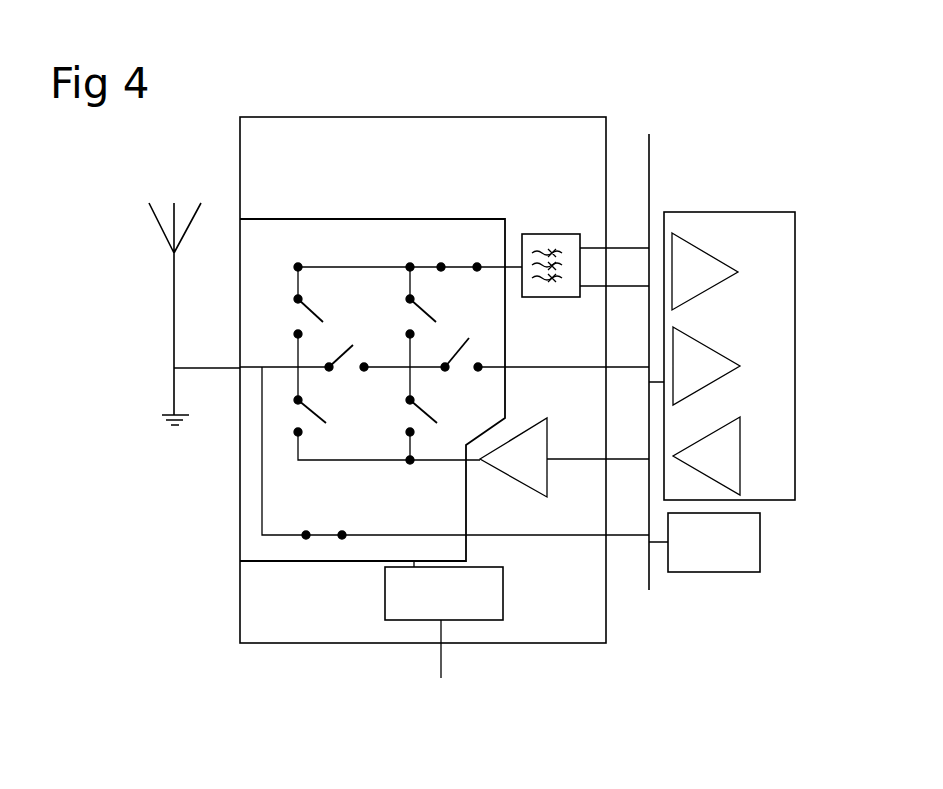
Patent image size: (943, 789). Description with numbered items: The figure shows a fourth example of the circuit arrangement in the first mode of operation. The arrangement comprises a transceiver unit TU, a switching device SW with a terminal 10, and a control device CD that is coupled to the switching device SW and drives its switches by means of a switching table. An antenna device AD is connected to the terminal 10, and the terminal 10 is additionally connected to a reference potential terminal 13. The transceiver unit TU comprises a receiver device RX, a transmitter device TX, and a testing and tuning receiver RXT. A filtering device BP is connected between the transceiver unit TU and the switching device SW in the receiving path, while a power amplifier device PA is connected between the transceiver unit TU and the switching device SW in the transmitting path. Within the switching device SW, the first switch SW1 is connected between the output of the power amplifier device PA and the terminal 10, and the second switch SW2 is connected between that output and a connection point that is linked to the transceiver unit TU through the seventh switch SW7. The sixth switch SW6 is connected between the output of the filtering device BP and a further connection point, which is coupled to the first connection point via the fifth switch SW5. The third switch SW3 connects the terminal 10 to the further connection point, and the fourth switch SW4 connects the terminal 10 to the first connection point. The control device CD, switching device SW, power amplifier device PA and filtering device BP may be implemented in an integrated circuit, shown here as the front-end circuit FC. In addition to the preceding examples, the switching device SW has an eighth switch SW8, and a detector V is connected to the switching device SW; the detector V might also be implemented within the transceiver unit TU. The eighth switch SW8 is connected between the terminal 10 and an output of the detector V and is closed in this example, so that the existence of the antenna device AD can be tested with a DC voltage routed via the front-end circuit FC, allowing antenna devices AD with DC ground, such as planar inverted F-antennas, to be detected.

The antenna device AD is at (158, 235).
The terminal 10 is at (237, 370).
The reference potential terminal 13 is at (167, 420).
The front-end circuit FC is at (462, 121).
The switching device SW is at (262, 218).
The first switch SW1 is at (310, 418).
The second switch SW2 is at (430, 410).
The third switch SW3 is at (295, 312).
The fourth switch SW4 is at (362, 340).
The fifth switch SW5 is at (432, 310).
The sixth switch SW6 is at (456, 262).
The seventh switch SW7 is at (460, 354).
The eighth switch SW8 is at (323, 530).
The filtering device BP is at (545, 232).
The power amplifier device PA is at (528, 490).
The transceiver unit TU is at (795, 226).
The receiver device RX is at (705, 245).
The testing and tuning receiver RXT is at (700, 333).
The transmitter device TX is at (693, 440).
The detector V is at (762, 548).
The control device CD is at (503, 600).